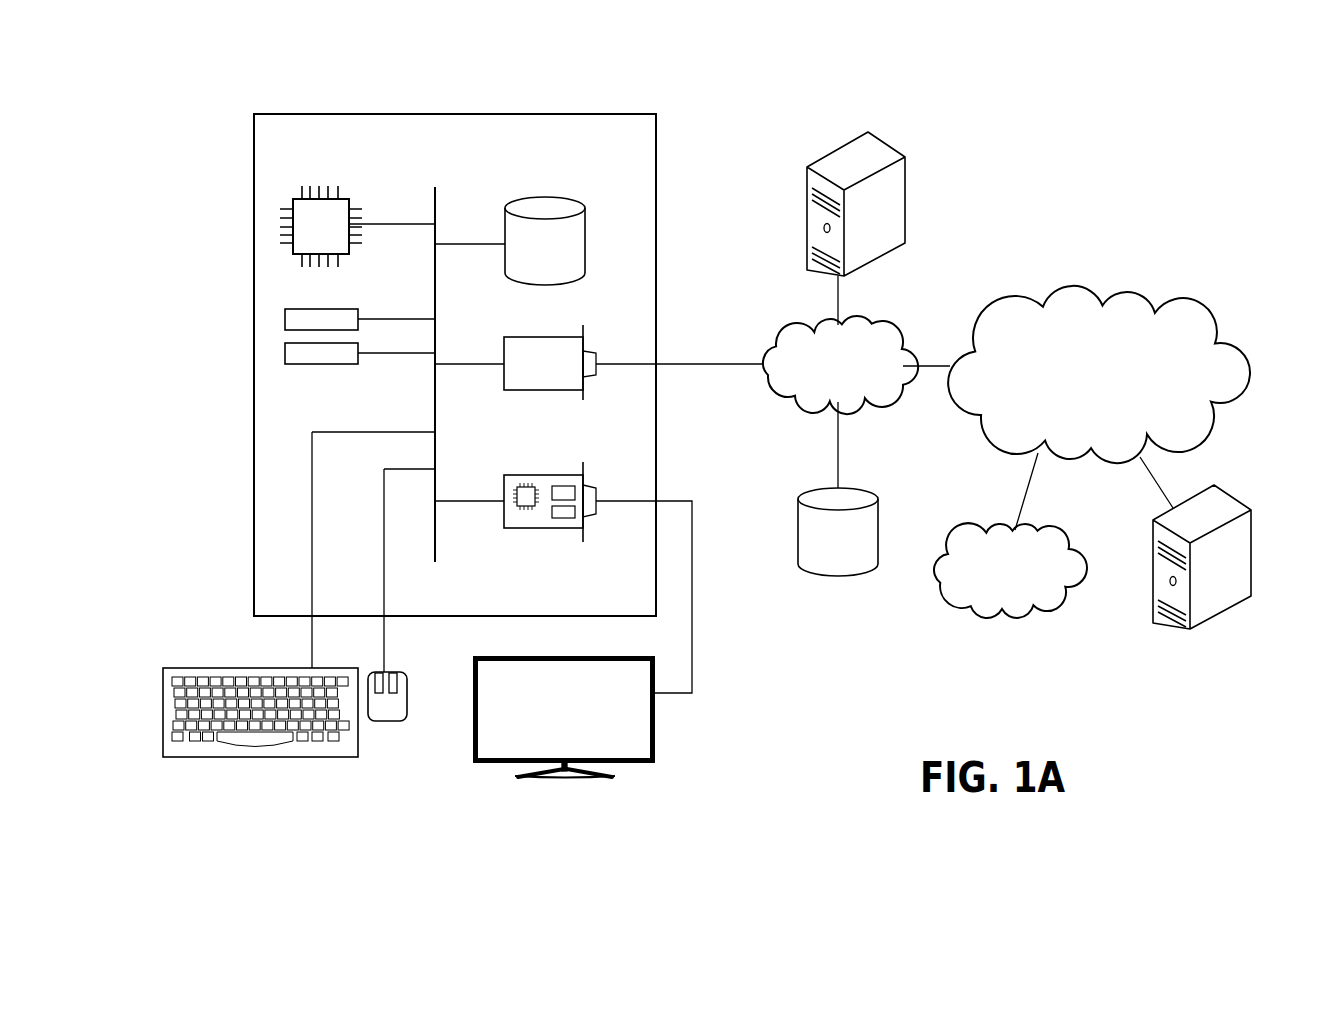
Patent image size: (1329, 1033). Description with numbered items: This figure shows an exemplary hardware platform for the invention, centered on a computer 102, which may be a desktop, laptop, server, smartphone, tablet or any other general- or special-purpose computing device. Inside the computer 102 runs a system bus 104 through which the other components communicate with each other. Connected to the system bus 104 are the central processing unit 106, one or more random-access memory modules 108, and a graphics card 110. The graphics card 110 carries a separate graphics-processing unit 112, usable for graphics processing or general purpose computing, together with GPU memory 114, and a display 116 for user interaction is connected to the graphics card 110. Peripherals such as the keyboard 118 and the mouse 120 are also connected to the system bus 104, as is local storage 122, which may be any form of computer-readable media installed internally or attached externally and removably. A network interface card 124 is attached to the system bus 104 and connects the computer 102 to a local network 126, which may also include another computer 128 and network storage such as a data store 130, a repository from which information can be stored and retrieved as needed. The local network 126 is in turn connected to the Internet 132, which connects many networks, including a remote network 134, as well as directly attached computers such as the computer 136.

The computer 102 is at (611, 114).
The system bus 104 is at (436, 199).
The central processing unit 106 is at (342, 197).
The random-access memory modules 108 is at (358, 350).
The graphics card 110 is at (504, 487).
The graphics-processing unit 112 is at (527, 507).
The GPU memory 114 is at (560, 518).
The display 116 is at (656, 746).
The keyboard 118 is at (263, 757).
The mouse 120 is at (382, 722).
The local storage 122 is at (586, 226).
The network interface card 124 is at (504, 348).
The local network 126 is at (893, 318).
The computer 128 is at (892, 141).
The data store 130 is at (871, 489).
The Internet 132 is at (1140, 286).
The remote network 134 is at (1065, 530).
The computer 136 is at (1230, 490).